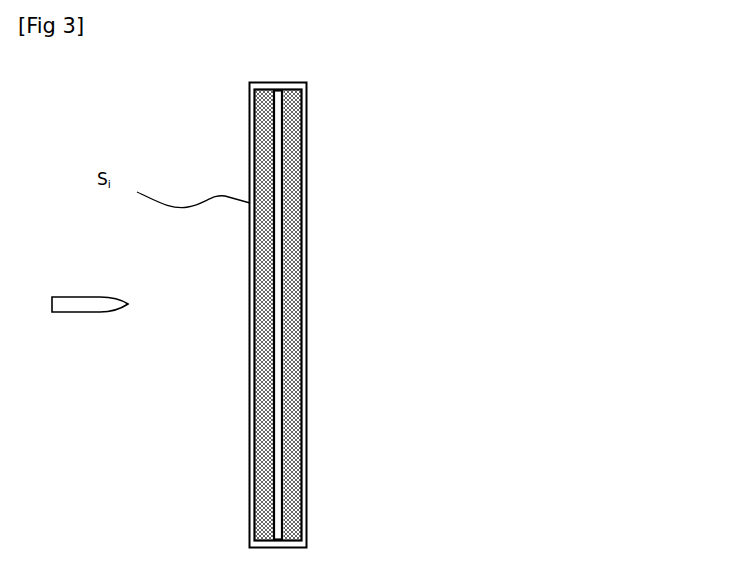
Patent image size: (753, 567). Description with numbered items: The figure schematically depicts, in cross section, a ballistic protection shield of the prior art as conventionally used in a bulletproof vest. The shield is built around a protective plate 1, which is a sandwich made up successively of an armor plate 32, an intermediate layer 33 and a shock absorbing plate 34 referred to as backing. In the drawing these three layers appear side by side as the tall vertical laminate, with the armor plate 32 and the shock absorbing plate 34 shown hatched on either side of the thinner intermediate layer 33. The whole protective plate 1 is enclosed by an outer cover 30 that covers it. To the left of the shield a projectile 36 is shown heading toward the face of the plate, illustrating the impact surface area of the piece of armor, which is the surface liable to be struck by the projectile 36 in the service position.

The protective plate 1 is at (303, 233).
The outer cover 30 is at (305, 113).
The armor plate 32 is at (268, 198).
The intermediate layer 33 is at (277, 176).
The shock absorbing plate 34 is at (300, 145).
The projectile 36 is at (95, 302).